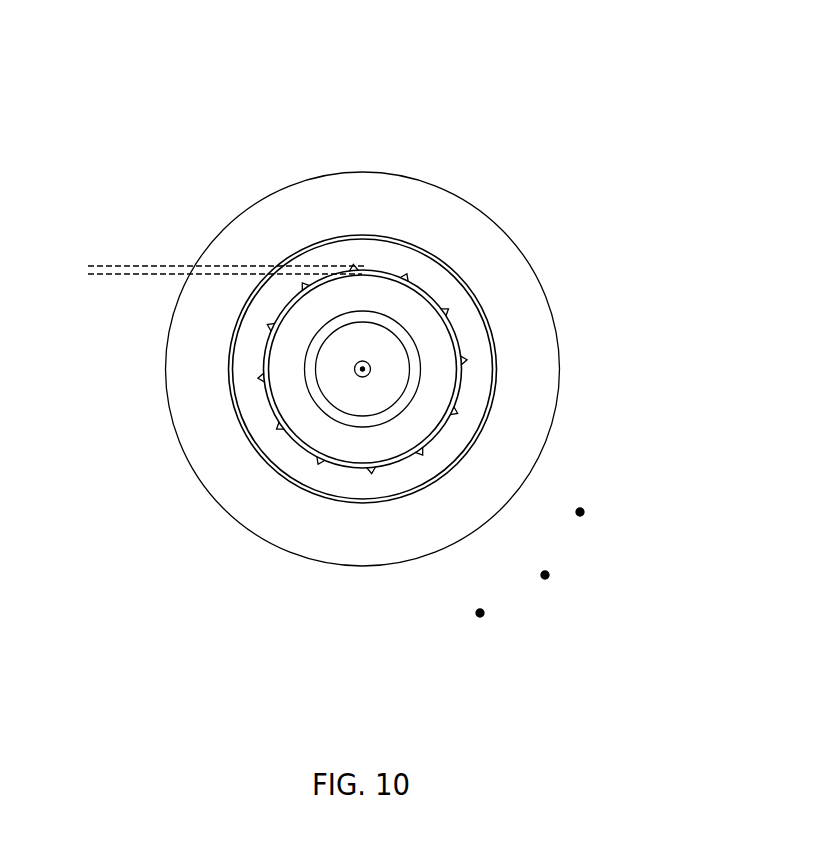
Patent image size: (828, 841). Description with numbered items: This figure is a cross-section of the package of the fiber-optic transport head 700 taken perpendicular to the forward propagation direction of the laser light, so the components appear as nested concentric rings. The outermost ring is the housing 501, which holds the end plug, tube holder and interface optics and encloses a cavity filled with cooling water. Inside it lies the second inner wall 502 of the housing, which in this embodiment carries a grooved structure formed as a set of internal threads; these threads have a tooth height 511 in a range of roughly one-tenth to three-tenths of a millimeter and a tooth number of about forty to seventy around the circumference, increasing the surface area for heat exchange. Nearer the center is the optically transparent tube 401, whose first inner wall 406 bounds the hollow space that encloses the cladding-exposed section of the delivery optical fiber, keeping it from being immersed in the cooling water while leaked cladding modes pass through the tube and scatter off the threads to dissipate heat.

The package of the fiber-optic transport head 700 is at (345, 162).
The housing 501 is at (293, 185).
The second inner wall 502 is at (417, 285).
The optically transparent tube 401 is at (365, 320).
The first inner wall 406 is at (403, 350).
The tooth height 511 is at (100, 317).